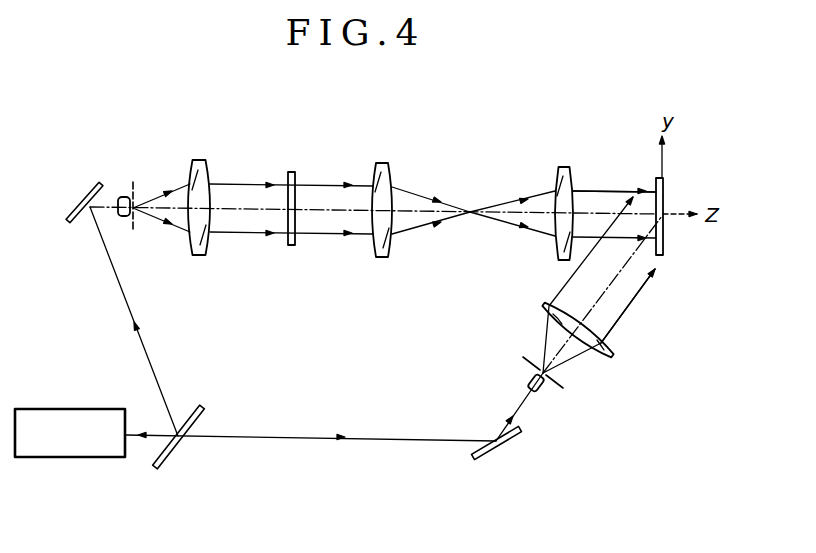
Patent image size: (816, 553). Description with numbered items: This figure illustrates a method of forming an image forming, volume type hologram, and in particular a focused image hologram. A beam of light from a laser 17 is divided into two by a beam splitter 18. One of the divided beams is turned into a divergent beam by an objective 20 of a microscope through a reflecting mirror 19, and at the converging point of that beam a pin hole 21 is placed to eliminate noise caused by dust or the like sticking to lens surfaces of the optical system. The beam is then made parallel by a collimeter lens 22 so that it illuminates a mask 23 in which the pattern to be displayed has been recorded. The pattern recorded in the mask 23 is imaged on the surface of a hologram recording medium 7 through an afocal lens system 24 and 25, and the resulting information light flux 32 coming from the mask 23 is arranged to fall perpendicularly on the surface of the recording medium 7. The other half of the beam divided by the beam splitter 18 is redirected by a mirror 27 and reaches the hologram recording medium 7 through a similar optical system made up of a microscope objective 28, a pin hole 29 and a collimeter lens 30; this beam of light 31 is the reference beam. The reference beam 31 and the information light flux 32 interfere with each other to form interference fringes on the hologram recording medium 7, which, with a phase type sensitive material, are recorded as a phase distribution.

The hologram recording medium 7 is at (664, 188).
The laser 17 is at (78, 452).
The beam splitter 18 is at (172, 451).
The reflecting mirror 19 is at (90, 196).
The objective of a microscope 20 is at (122, 197).
The pin hole 21 is at (134, 186).
The collimeter lens 22 is at (201, 160).
The mask 23 is at (293, 172).
The afocal lens system lens 24 is at (385, 164).
The afocal lens system lens 25 is at (563, 167).
The mirror 27 is at (494, 449).
The microscope objective 28 is at (539, 391).
The pin hole 29 is at (564, 387).
The collimeter lens 30 is at (612, 349).
The reference beam 31 is at (628, 301).
The information light flux 32 is at (605, 191).